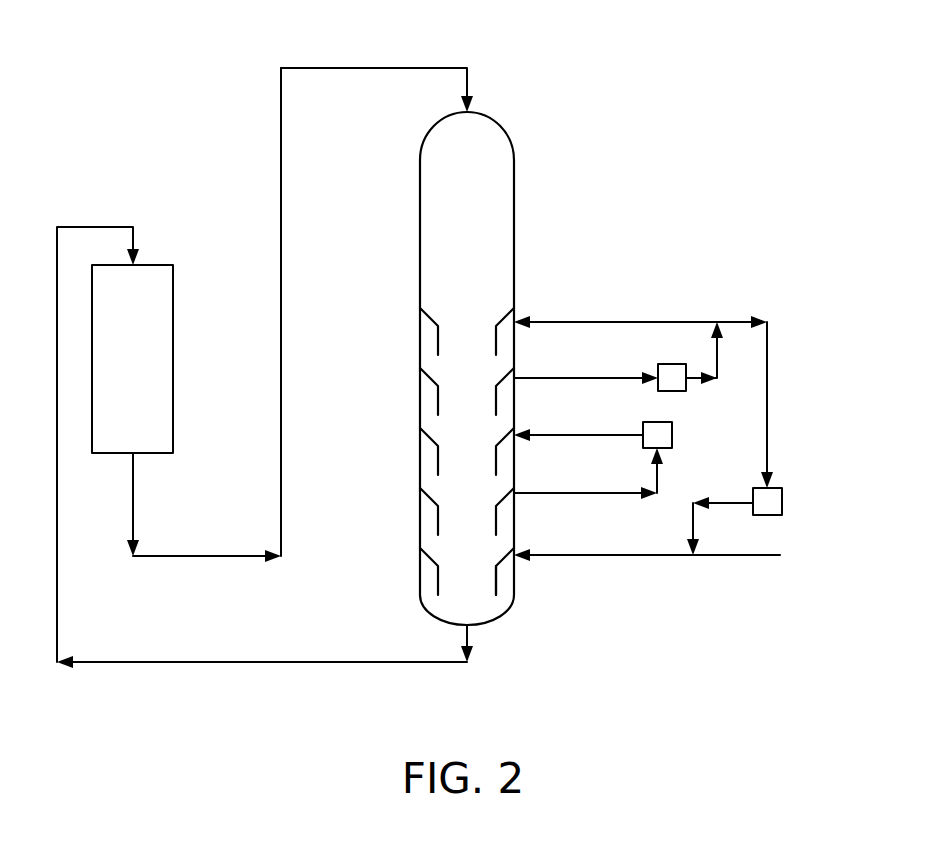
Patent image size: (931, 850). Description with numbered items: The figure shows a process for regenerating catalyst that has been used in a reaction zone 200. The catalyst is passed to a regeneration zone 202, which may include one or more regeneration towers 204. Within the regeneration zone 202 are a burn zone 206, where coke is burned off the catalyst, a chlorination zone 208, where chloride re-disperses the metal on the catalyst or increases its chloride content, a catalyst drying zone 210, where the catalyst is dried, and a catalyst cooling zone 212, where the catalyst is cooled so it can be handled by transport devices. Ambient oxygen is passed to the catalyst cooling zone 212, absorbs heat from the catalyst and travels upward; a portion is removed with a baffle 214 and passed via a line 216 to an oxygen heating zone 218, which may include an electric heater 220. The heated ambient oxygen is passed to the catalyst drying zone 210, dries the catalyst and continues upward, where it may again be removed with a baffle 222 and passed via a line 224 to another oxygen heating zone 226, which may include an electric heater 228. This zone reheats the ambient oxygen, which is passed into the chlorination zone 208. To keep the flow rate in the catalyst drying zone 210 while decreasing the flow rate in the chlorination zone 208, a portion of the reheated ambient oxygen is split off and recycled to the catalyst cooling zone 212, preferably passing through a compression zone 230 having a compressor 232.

The reaction zone 200 is at (91, 217).
The regeneration zone 202 is at (418, 52).
The regeneration tower 204 is at (496, 585).
The burn zone 206 is at (405, 145).
The chlorination zone 208 is at (405, 305).
The catalyst drying zone 210 is at (405, 395).
The catalyst cooling zone 212 is at (405, 528).
The baffle 214 is at (496, 518).
The line 216 is at (585, 491).
The oxygen heating zone 218 is at (667, 422).
The electric heater 220 is at (672, 445).
The baffle 222 is at (496, 398).
The line 224 is at (573, 376).
The oxygen heating zone 226 is at (661, 391).
The electric heater 228 is at (661, 364).
The compression zone 230 is at (780, 488).
The compressor 232 is at (782, 508).